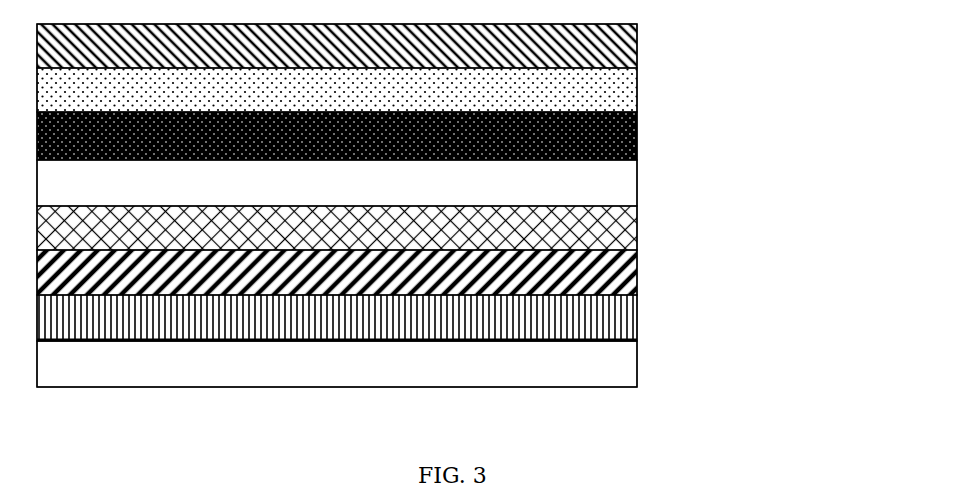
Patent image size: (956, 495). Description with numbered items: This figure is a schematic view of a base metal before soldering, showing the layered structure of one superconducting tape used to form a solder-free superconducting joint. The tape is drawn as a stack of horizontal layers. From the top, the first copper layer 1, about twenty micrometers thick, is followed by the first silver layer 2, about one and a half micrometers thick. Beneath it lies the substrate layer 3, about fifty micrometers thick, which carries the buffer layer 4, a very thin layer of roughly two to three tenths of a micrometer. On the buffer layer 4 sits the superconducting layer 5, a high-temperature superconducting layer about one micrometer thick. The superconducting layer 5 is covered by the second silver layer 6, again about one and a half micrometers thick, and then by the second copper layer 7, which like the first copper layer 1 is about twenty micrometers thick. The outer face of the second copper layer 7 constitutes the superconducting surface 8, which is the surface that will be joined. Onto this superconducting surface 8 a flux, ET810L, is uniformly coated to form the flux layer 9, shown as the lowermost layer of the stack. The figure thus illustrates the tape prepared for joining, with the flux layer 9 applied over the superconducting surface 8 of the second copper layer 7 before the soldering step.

The first copper layer 1 is at (637, 44).
The first silver layer 2 is at (637, 95).
The substrate layer 3 is at (637, 136).
The buffer layer 4 is at (637, 188).
The superconducting layer 5 is at (637, 236).
The second silver layer 6 is at (637, 273).
The second copper layer 7 is at (637, 325).
The superconducting surface 8 is at (637, 340).
The flux layer 9 is at (637, 370).